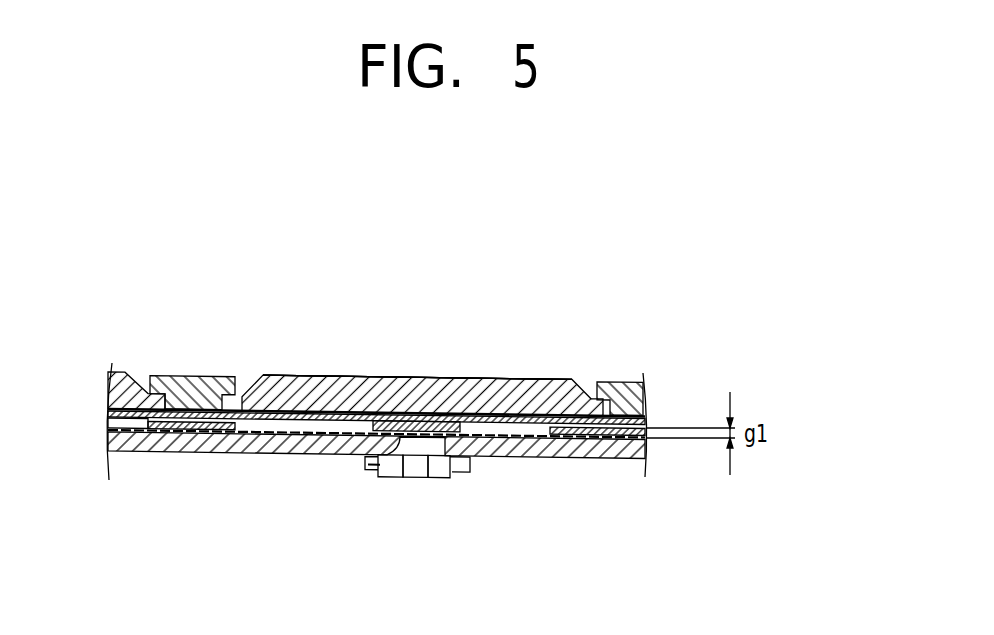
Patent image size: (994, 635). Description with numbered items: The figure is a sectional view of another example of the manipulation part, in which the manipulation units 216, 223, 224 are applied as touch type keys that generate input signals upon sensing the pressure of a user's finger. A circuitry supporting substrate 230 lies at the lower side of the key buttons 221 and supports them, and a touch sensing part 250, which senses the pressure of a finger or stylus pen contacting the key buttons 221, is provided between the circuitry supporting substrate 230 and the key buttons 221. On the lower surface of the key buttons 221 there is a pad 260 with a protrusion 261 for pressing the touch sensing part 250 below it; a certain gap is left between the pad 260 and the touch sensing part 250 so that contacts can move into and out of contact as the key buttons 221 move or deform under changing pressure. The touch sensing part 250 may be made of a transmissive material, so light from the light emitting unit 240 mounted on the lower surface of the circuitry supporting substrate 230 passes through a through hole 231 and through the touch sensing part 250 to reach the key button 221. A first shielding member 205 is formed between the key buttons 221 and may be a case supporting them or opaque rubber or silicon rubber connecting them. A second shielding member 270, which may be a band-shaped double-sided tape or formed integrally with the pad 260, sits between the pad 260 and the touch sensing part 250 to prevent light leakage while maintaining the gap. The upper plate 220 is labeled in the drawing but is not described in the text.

The first shielding member 205 is at (188, 382).
The manipulation unit 216 is at (388, 310).
The manipulation unit 223 is at (388, 310).
The manipulation unit 224 is at (388, 310).
The upper plate 220 is at (462, 372).
The key button 221 is at (125, 372).
The circuitry supporting substrate 230 is at (647, 455).
The through hole 231 is at (398, 473).
The light emitting unit 240 is at (435, 477).
The touch sensing part 250 is at (528, 445).
The pad 260 is at (645, 422).
The protrusion 261 is at (362, 455).
The second shielding member 270 is at (162, 428).